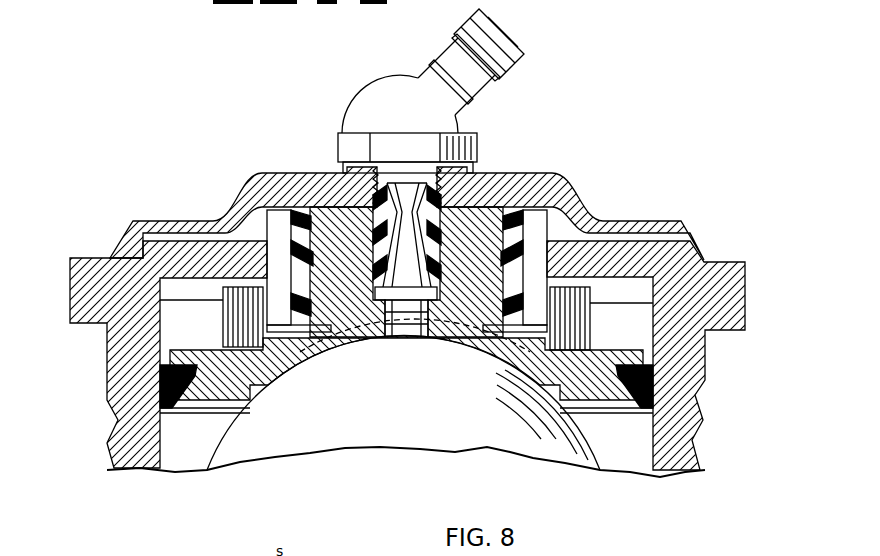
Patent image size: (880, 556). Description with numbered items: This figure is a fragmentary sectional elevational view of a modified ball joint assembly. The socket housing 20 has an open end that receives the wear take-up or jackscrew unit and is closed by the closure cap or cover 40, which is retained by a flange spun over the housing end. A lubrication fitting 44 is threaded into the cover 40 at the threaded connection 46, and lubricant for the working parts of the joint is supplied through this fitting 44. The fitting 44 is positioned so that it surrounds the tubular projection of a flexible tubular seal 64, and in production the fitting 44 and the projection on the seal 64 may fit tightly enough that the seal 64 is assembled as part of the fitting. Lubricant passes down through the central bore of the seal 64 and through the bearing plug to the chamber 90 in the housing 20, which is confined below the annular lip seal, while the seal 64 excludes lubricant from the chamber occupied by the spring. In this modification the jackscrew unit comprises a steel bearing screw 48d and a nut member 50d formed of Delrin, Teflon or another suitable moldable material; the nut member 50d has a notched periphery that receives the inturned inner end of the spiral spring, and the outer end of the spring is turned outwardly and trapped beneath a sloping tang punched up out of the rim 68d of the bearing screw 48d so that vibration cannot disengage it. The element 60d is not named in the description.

The housing 20 is at (133, 377).
The closure cap or cover 40 is at (251, 187).
The lubrication fitting 44 is at (358, 117).
The threaded connection 46 is at (445, 187).
The bearing screw 48d is at (500, 346).
The nut member 50d is at (512, 235).
The plunger seat 60d is at (417, 338).
The flexible tubular seal 64 is at (407, 260).
The rim of the bearing screw 68d is at (643, 362).
The chamber 90 is at (194, 447).